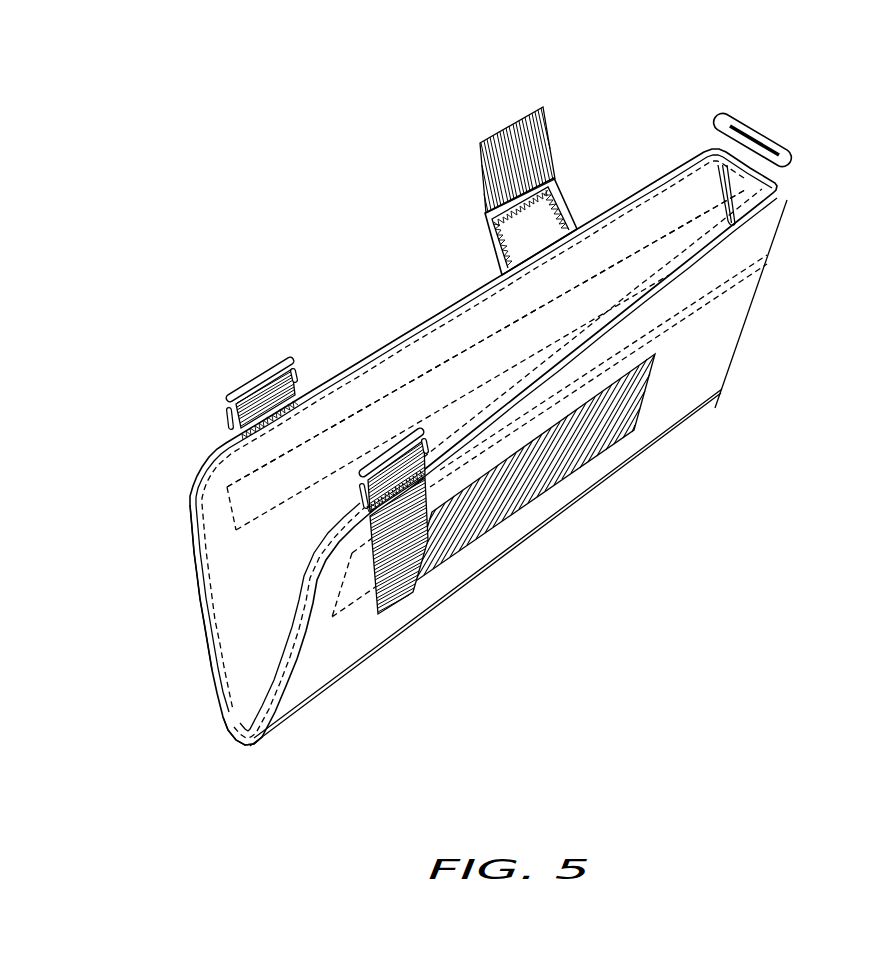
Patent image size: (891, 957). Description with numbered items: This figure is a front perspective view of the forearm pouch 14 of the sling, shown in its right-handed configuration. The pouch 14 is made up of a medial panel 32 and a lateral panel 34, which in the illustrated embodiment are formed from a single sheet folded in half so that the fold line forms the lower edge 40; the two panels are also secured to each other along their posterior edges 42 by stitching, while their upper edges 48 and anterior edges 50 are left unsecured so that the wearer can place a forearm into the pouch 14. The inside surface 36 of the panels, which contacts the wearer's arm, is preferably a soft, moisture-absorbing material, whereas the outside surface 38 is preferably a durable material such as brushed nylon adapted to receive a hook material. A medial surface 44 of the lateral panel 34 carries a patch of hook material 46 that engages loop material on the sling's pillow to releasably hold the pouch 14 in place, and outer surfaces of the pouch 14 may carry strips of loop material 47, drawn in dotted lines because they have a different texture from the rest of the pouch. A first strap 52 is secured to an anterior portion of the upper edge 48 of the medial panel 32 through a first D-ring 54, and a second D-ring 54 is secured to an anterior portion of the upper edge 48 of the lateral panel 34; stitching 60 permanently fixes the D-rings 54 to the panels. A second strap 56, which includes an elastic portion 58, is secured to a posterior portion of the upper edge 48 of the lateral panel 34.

The forearm pouch 14 is at (216, 130).
The medial panel 32 is at (340, 645).
The lateral panel 34 is at (203, 478).
The inside surface 36 is at (240, 688).
The outside surface 38 is at (690, 378).
The lower edge 40 is at (580, 507).
The posterior edge 42 is at (779, 230).
The medial surface 44 is at (690, 365).
The hook material 46 is at (603, 431).
The loop material 47 is at (493, 358).
The upper edge 48 is at (472, 427).
The anterior edge 50 is at (280, 670).
The first strap 52 is at (415, 563).
The D-ring 54 is at (396, 446).
The second strap 56 is at (550, 130).
The elastic portion 58 is at (578, 205).
The stitching 60 is at (260, 428).